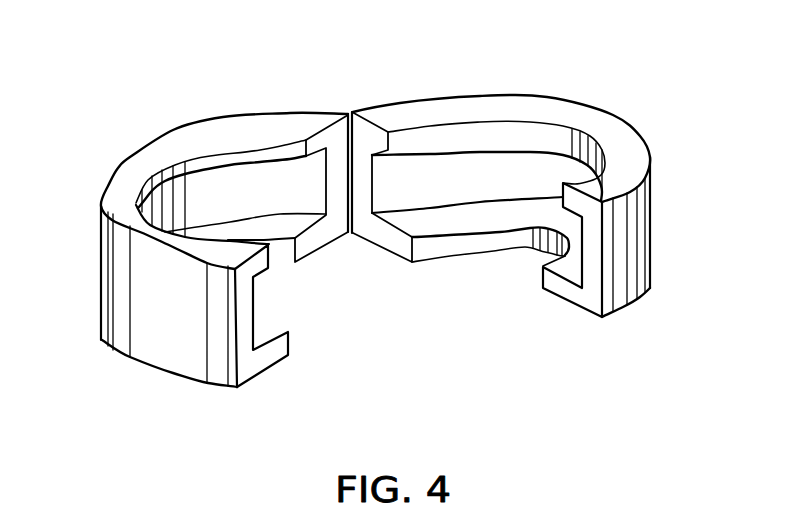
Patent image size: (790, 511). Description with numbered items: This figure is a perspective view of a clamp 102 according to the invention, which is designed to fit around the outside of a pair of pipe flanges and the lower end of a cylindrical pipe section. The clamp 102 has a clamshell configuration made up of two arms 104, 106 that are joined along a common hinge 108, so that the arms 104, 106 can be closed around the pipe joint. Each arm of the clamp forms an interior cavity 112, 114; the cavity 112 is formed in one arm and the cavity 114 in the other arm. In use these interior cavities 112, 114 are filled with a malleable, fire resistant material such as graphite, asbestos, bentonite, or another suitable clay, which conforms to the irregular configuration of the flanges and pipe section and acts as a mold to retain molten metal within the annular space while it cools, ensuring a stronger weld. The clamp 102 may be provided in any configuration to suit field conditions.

The clamp 102 is at (266, 120).
The arm 104 is at (160, 290).
The arm 106 is at (623, 233).
The hinge 108 is at (318, 127).
The interior cavity 112 is at (290, 223).
The interior cavity 114 is at (482, 182).